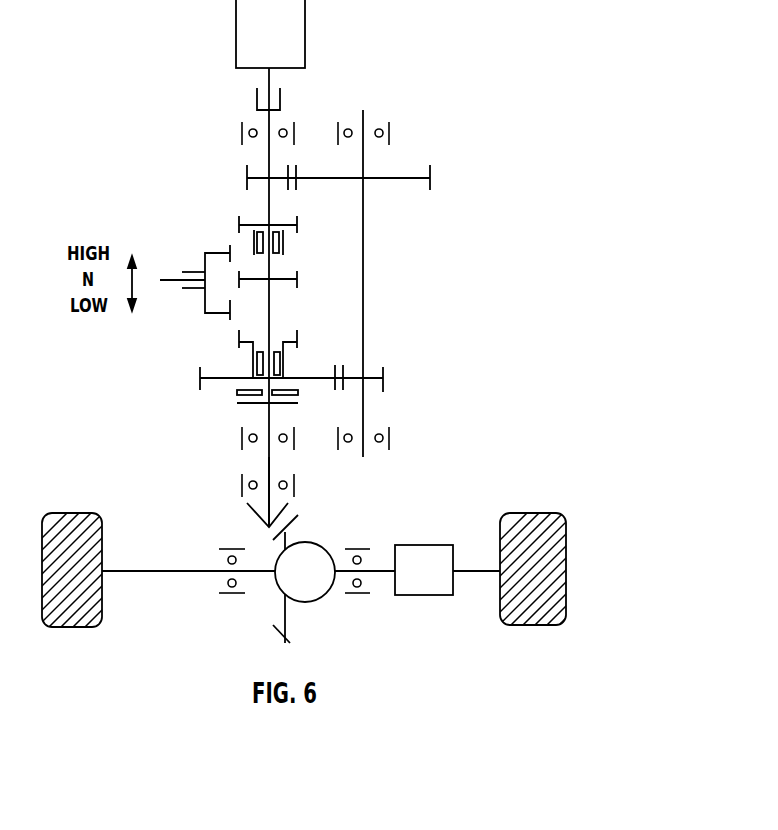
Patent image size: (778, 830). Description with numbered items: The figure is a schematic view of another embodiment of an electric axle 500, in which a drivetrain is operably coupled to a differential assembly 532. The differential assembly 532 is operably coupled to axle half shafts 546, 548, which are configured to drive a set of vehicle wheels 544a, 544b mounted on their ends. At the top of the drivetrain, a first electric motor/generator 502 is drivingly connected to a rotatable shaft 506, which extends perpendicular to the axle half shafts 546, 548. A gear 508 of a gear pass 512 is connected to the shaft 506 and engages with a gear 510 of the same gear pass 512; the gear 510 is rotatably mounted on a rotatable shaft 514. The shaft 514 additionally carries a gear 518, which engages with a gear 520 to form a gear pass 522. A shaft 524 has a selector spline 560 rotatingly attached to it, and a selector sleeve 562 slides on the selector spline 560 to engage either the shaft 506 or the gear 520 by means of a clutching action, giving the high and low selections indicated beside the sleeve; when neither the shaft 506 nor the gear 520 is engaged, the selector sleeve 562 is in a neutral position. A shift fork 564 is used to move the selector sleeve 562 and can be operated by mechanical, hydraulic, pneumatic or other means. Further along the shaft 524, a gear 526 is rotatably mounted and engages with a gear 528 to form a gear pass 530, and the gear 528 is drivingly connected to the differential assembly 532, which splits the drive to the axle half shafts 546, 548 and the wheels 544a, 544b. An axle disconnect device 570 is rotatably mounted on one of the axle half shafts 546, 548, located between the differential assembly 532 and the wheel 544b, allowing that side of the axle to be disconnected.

The electric axle 500 is at (575, 115).
The first electric motor/generator 502 is at (286, 40).
The rotatable shaft 506 is at (267, 208).
The gear 508 is at (247, 175).
The gear 510 is at (430, 166).
The gear pass 512 is at (378, 159).
The rotatable shaft 514 is at (363, 333).
The gear 518 is at (383, 371).
The gear 520 is at (200, 388).
The gear pass 522 is at (402, 392).
The shaft 524 is at (270, 457).
The gear 526 is at (253, 522).
The gear 528 is at (285, 643).
The gear pass 530 is at (267, 572).
The differential assembly 532 is at (321, 584).
The vehicle wheel 544a is at (95, 657).
The vehicle wheel 544b is at (560, 657).
The axle half shaft 546 is at (143, 571).
The axle half shaft 548 is at (468, 571).
The selector spline 560 is at (300, 279).
The selector sleeve 562 is at (203, 255).
The shift fork 564 is at (168, 283).
The axle disconnect device 570 is at (440, 584).